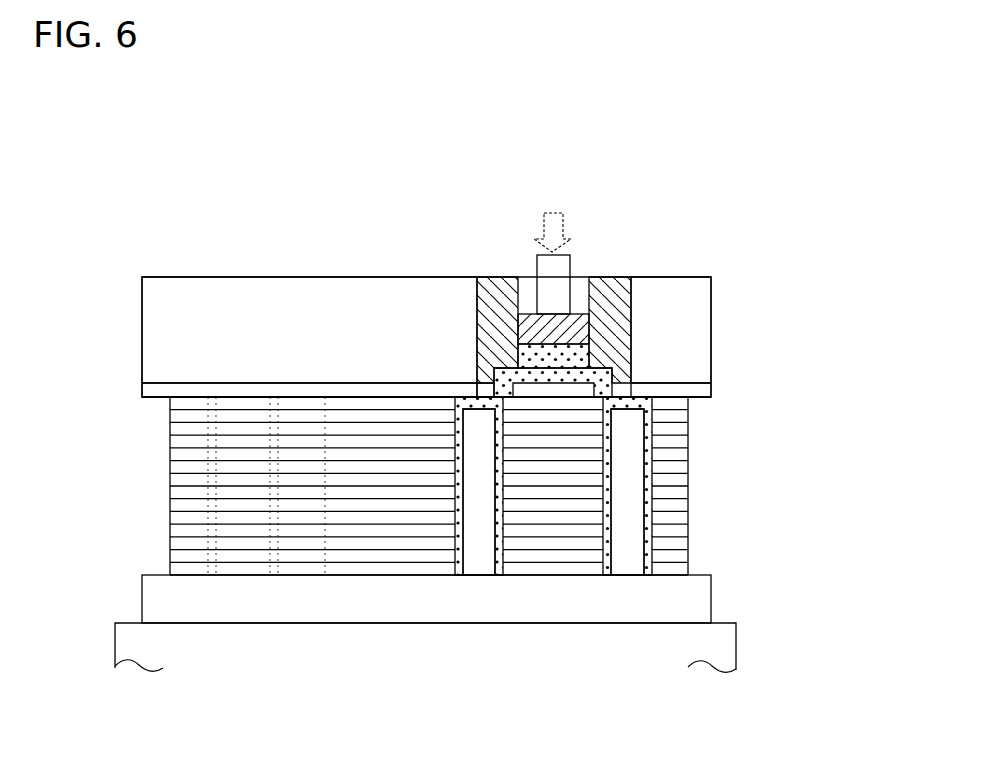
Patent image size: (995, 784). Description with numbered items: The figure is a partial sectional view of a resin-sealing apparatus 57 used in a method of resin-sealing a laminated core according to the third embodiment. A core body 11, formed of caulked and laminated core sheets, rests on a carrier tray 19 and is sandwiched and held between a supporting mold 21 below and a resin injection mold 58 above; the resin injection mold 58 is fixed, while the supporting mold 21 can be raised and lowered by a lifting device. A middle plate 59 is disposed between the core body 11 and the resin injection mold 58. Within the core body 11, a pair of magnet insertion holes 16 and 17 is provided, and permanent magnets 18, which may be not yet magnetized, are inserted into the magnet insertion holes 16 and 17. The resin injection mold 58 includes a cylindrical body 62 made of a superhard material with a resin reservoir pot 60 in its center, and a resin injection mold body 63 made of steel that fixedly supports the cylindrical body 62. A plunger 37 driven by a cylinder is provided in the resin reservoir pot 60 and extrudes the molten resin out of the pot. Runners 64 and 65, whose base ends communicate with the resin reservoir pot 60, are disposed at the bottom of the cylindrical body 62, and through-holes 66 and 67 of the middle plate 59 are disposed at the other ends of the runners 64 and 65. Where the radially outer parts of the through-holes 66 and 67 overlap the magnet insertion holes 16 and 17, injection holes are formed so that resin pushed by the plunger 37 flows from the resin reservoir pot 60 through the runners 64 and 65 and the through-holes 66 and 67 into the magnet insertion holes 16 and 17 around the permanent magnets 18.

The core body 11 is at (700, 470).
The magnet insertion hole 16 is at (460, 540).
The magnet insertion hole 17 is at (655, 550).
The permanent magnet 18 is at (628, 552).
The carrier tray 19 is at (687, 598).
The supporting mold 21 is at (718, 646).
The plunger 37 is at (566, 328).
The resin-sealing apparatus 57 is at (672, 240).
The resin injection mold 58 is at (716, 290).
The middle plate 59 is at (697, 389).
The resin reservoir pot 60 is at (533, 330).
The cylindrical body 62 is at (612, 276).
The resin injection mold body 63 is at (167, 338).
The runner 64 is at (495, 367).
The runner 65 is at (612, 368).
The through-hole 66 is at (477, 382).
The through-hole 67 is at (610, 387).